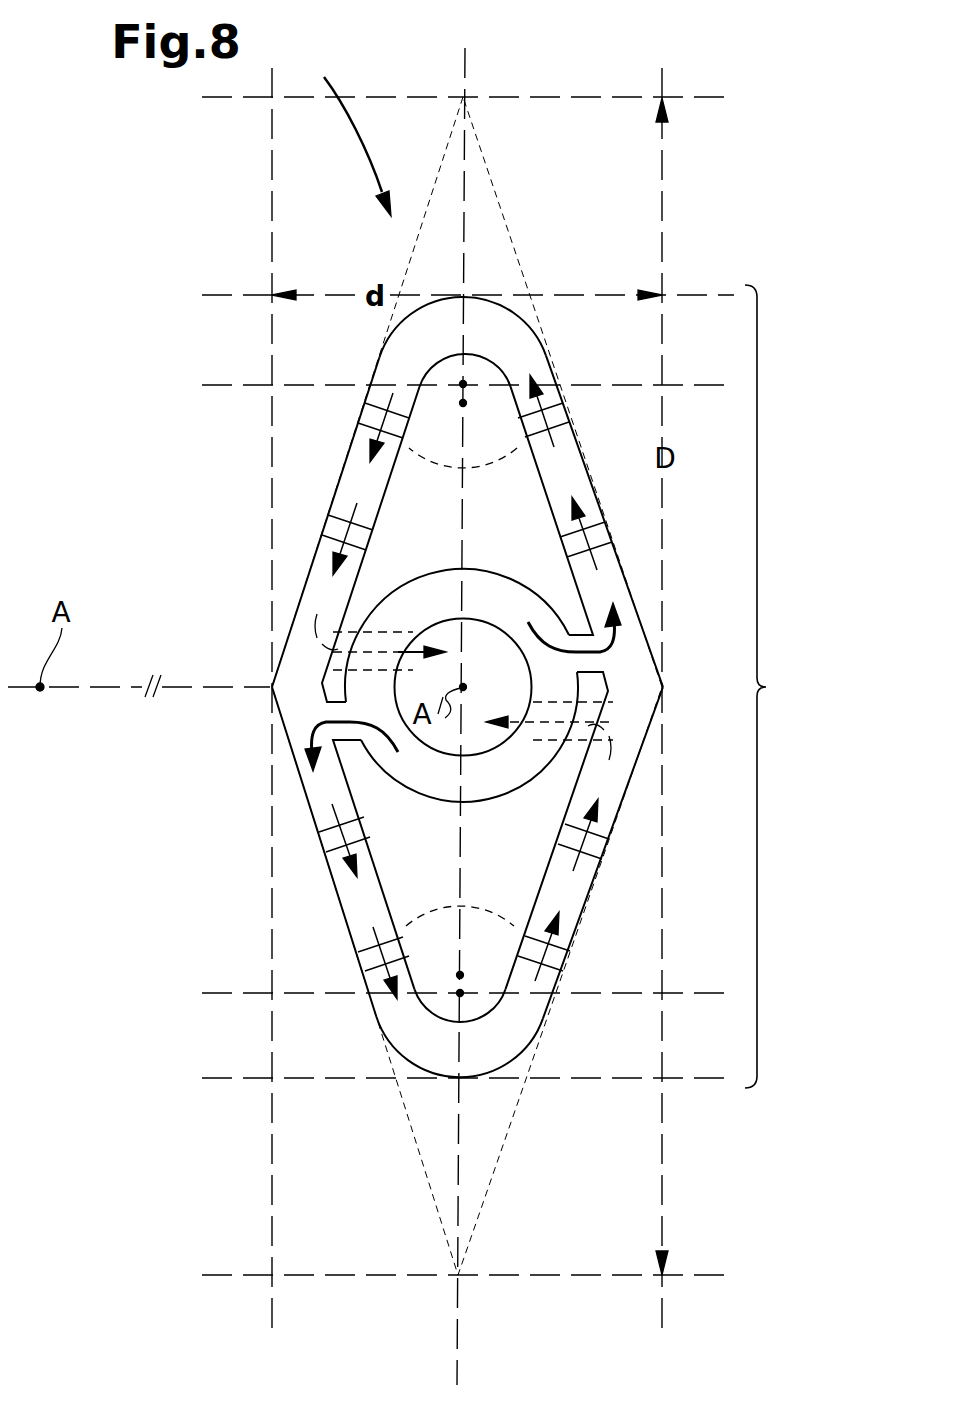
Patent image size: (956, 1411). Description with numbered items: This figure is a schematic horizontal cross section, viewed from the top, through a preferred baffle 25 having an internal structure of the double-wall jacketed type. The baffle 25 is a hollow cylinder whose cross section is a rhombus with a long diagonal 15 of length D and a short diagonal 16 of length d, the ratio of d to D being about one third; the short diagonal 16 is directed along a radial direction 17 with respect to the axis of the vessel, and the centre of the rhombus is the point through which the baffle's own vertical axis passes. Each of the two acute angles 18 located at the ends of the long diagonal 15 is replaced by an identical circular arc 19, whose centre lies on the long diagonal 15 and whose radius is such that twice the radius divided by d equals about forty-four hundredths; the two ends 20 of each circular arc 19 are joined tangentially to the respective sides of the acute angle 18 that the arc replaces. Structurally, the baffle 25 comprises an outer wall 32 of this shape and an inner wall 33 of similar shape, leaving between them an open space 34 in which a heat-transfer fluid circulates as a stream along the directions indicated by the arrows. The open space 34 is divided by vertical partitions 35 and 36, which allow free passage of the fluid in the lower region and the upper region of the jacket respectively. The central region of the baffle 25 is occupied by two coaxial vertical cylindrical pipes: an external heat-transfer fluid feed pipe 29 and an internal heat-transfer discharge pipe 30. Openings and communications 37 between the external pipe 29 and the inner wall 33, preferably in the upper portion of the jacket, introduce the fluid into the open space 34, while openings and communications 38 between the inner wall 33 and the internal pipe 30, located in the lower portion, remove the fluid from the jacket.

The long diagonal 15 is at (465, 528).
The short diagonal 16 is at (494, 684).
The radial direction 17 is at (128, 688).
The acute angle 18 is at (467, 97).
The circular arc 19 is at (508, 300).
The ends of the circular arc 20 is at (386, 351).
The baffle 25 is at (767, 687).
The external heat-transfer fluid feed pipe 29 is at (452, 805).
The internal heat-transfer discharge pipe 30 is at (428, 742).
The outer wall 32 is at (335, 485).
The inner wall 33 is at (393, 475).
The open space 34 is at (367, 480).
The vertical partition 35 is at (358, 405).
The vertical partition 36 is at (560, 417).
The openings and communications 37 is at (595, 663).
The openings and communications 38 is at (381, 637).